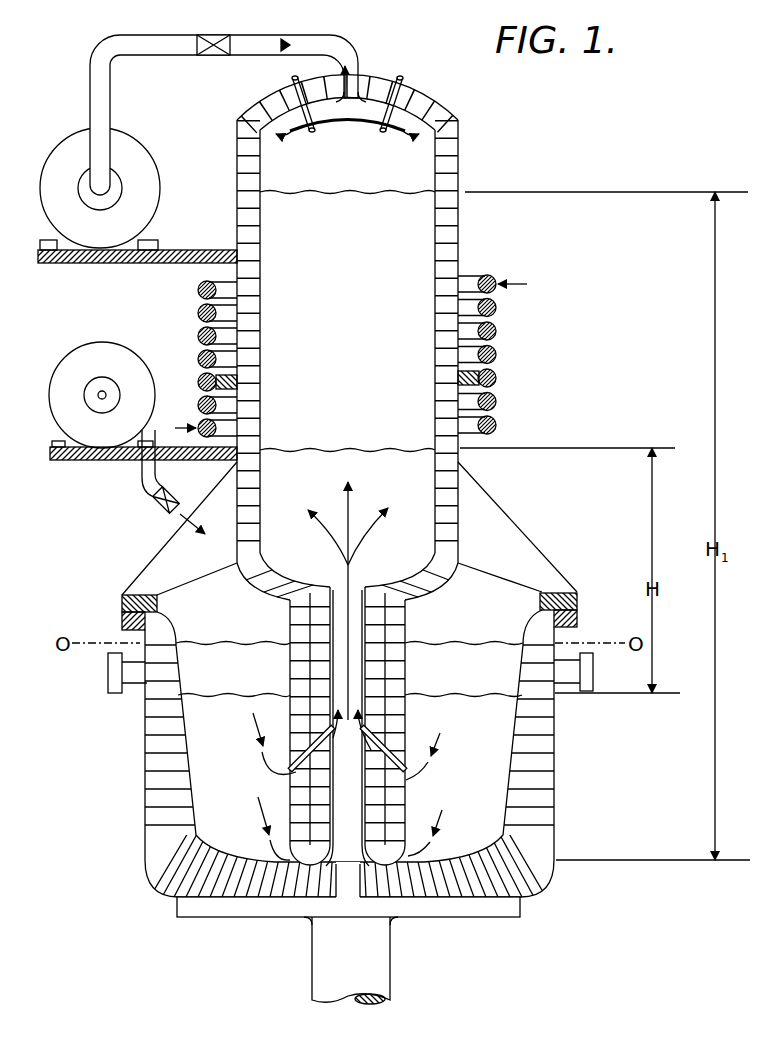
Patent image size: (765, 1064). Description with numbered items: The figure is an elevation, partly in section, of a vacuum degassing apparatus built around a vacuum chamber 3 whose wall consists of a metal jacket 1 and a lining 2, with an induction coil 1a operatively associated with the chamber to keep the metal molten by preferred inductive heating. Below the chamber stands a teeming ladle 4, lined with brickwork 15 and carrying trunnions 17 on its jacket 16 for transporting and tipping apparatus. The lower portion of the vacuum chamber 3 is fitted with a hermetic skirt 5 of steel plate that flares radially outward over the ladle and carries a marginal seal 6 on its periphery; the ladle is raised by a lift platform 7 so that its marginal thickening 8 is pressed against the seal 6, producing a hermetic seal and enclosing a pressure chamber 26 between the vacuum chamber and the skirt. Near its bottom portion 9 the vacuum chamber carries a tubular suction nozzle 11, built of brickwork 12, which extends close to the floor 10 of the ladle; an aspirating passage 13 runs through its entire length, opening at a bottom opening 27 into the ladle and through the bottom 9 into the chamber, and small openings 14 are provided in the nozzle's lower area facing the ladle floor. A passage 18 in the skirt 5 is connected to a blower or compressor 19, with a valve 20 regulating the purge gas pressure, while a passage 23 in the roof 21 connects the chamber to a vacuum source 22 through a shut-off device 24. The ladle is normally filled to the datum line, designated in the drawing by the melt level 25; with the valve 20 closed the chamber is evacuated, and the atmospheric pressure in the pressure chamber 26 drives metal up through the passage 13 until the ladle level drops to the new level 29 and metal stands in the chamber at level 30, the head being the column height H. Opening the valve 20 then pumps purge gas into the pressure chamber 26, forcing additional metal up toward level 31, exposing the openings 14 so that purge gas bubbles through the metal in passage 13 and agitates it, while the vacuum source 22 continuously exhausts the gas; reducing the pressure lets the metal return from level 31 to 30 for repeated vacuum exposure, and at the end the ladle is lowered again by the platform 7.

The metal jacket 1 is at (462, 292).
The induction coil 1a is at (197, 310).
The lining 2 is at (450, 322).
The vacuum chamber 3 is at (425, 357).
The teeming ladle 4 is at (554, 768).
The hermetic skirt 5 is at (525, 530).
The marginal seal 6 is at (121, 601).
The lift platform 7 is at (335, 905).
The marginal thickening 8 is at (121, 619).
The bottom portion 9 is at (373, 585).
The floor 10 is at (356, 880).
The tubular suction nozzle 11 is at (396, 662).
The brickwork 12 is at (397, 720).
The aspirating passage 13 is at (340, 806).
The openings 14 is at (312, 757).
The brickwork 15 is at (530, 787).
The jacket 16 is at (145, 708).
The trunnions 17 is at (108, 680).
The passage 18 is at (170, 517).
The blower or compressor 19 is at (135, 373).
The valve 20 is at (170, 495).
The roof 21 is at (405, 92).
The vacuum source 22 is at (155, 178).
The passage 23 is at (265, 56).
The shut-off device 24 is at (212, 55).
The melt level 25 is at (235, 645).
The pressure chamber 26 is at (188, 603).
The bottom opening 27 is at (348, 728).
The new level of molten metal in the teeming ladle 29 is at (228, 697).
The new level in the vacuum chamber 30 is at (322, 448).
The level of the molten metal in the vacuum chamber 31 is at (356, 190).